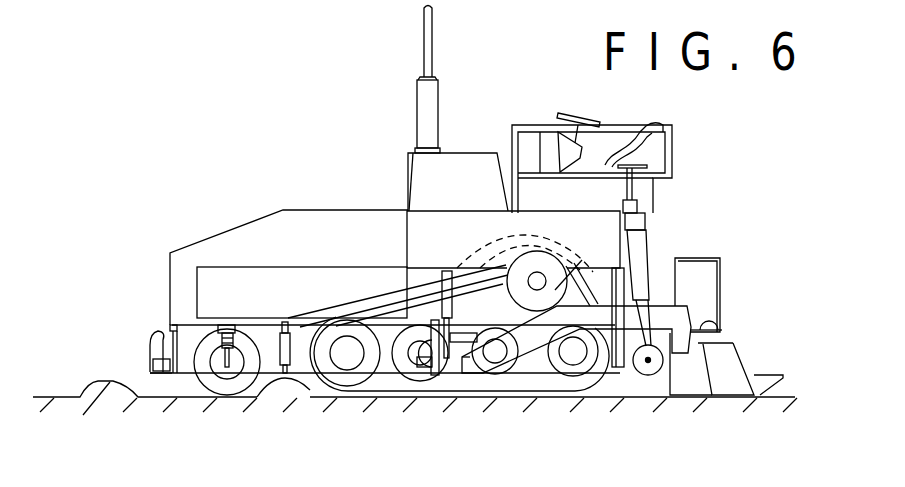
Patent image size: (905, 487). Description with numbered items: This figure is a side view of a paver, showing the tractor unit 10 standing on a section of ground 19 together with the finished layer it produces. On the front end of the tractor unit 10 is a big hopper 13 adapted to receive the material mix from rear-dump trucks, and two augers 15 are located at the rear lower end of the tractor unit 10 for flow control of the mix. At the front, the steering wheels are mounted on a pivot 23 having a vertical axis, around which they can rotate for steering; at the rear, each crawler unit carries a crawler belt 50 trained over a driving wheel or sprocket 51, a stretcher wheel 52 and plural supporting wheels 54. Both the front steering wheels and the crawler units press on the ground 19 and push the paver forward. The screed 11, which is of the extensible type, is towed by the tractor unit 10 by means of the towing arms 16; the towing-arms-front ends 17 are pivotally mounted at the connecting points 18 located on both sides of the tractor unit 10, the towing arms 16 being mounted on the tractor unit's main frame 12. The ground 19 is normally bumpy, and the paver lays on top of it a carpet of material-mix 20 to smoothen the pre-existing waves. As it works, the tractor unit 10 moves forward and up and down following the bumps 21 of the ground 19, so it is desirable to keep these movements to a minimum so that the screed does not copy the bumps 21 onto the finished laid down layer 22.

The tractor unit 10 is at (438, 242).
The screed 11 is at (724, 376).
The main frame 12 is at (192, 339).
The hopper 13 is at (330, 238).
The augers 15 is at (628, 367).
The towing arms 16 is at (582, 322).
The towing-arms-front ends 17 is at (467, 368).
The connecting points 18 is at (432, 372).
The ground 19 is at (52, 402).
The carpet of material-mix 20 is at (640, 400).
The bumps 21 is at (288, 405).
The finished laid down layer 22 is at (795, 397).
The pivot 23 is at (219, 324).
The crawler belt 50 is at (368, 396).
The driving wheel or sprocket 51 is at (567, 272).
The stretcher wheel 52 is at (347, 348).
The supporting wheels 54 is at (408, 380).